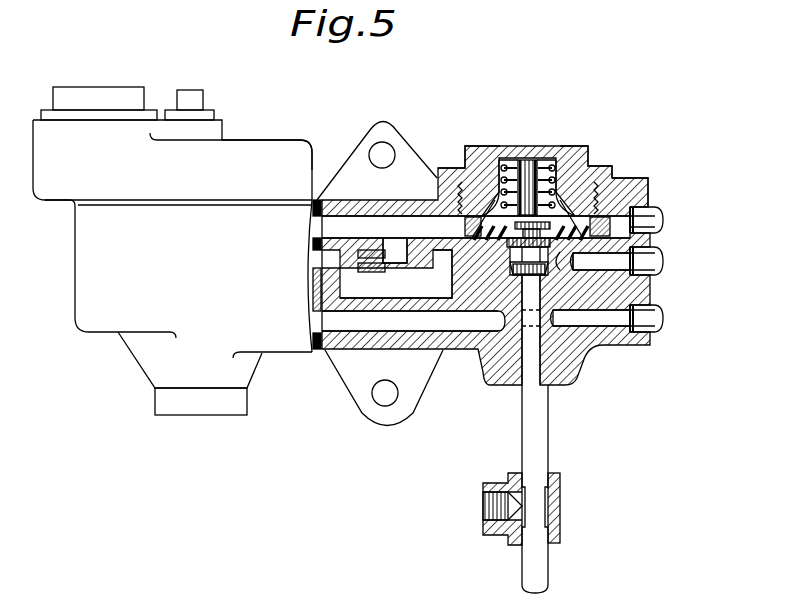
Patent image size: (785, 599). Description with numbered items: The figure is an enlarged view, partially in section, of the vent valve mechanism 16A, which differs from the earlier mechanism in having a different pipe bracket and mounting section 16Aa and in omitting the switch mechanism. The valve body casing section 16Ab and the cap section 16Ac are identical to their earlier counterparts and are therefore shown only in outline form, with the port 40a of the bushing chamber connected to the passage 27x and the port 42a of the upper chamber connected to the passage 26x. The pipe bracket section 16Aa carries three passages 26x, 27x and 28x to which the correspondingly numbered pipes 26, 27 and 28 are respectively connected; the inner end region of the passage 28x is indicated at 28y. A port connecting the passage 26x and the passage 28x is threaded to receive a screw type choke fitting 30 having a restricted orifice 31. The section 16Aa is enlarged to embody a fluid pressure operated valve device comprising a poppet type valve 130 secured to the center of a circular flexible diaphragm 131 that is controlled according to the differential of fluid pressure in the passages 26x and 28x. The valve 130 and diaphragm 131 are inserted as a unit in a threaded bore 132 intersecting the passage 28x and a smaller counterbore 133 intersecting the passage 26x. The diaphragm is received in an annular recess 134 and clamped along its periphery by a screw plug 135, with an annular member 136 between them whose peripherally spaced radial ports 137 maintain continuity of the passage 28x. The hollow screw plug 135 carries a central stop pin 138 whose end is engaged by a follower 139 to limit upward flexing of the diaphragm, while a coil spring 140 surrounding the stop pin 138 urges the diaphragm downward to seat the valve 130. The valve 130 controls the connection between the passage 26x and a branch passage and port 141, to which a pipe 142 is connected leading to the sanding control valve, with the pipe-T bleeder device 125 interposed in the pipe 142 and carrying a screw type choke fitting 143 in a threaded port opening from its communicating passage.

The vent valve mechanism 16A is at (226, 110).
The pipe bracket and mounting section 16Aa is at (627, 183).
The valve body casing section 16Ab is at (80, 258).
The cap section 16Ac is at (287, 143).
The pipe 26 is at (650, 257).
The passage 26x is at (640, 262).
The pipe 27 is at (650, 312).
The passage 27x is at (640, 320).
The pipe 28 is at (650, 212).
The passage 28x is at (640, 225).
The inner end of bore 28x 28y is at (310, 220).
The screw type choke fitting 30 is at (368, 250).
The restricted orifice 31 is at (390, 262).
The port 40a is at (313, 325).
The port 42a is at (310, 256).
The bleeder device 125 is at (569, 518).
The valve 130 is at (562, 262).
The flexible diaphragm 131 is at (500, 165).
The threaded bore 132 is at (605, 180).
The counterbore 133 is at (580, 262).
The annular recess 134 is at (409, 274).
The screw plug 135 is at (470, 150).
The annular member 136 is at (580, 150).
The ports 137 is at (592, 222).
The stop pin 138 is at (525, 158).
The follower 139 is at (515, 262).
The coil spring 140 is at (555, 158).
The branch passage and port 141 is at (537, 345).
The pipe 142 is at (575, 572).
The screw type choke fitting 143 is at (520, 505).